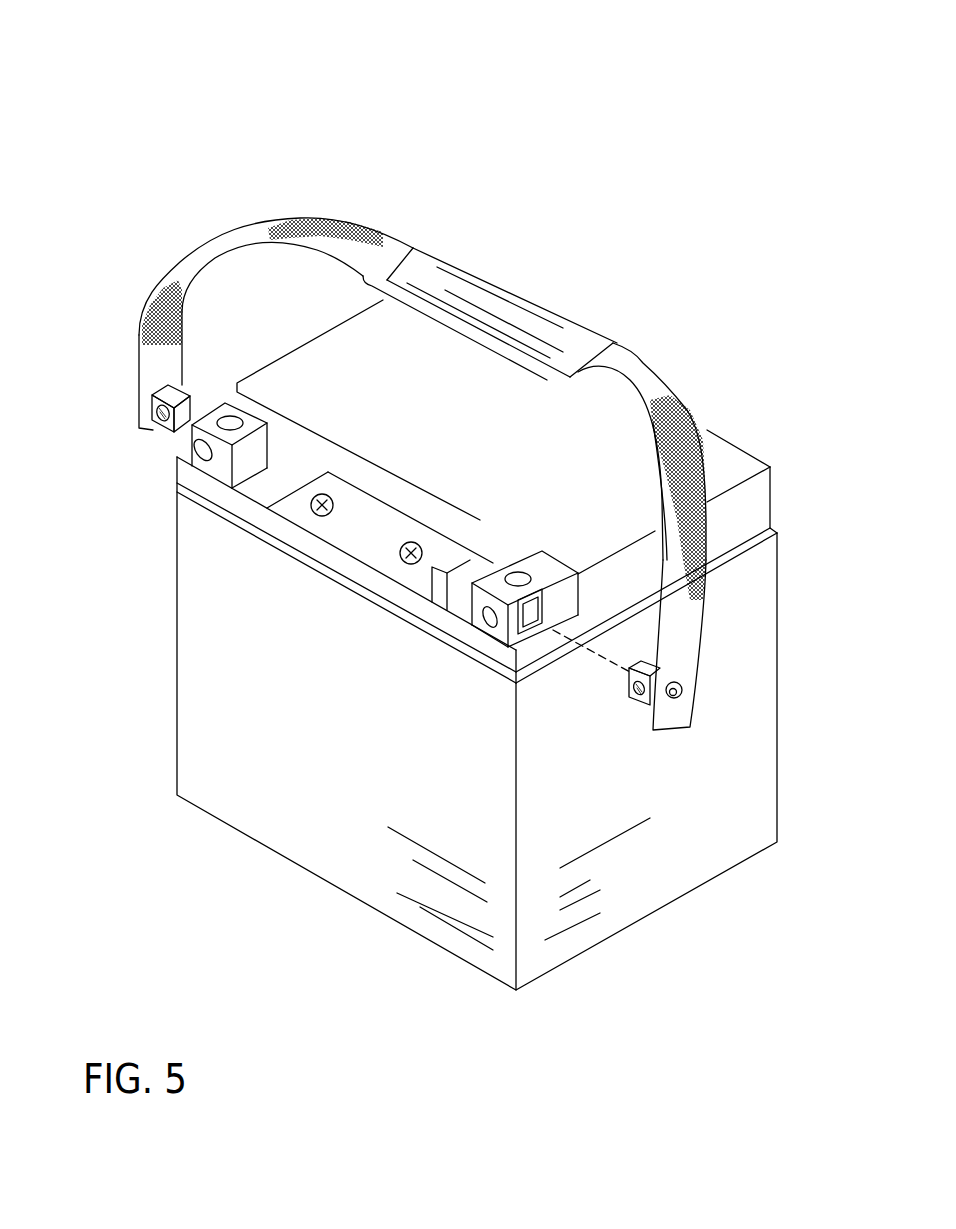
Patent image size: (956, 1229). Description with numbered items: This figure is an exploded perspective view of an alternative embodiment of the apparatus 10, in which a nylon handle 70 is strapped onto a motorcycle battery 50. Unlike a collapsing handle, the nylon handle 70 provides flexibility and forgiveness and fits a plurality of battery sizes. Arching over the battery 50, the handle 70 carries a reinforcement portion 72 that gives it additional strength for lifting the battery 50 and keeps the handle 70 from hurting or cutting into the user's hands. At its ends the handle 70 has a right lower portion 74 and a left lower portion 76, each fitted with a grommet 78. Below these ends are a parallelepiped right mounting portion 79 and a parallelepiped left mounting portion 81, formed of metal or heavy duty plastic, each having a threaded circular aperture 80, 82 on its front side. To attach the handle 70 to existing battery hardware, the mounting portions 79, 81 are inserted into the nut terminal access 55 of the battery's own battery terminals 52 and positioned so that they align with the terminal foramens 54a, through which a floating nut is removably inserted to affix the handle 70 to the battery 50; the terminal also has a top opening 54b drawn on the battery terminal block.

The apparatus 10 is at (551, 194).
The battery 50 is at (778, 564).
The battery terminals 52 is at (477, 623).
The terminal foramens 54a is at (493, 627).
The top opening of terminal 54b is at (518, 578).
The nut terminal access 55 is at (527, 628).
The nylon handle 70 is at (705, 403).
The reinforcement portion 72 is at (619, 338).
The right lower portion 74 is at (690, 703).
The left lower portion 76 is at (135, 404).
The grommet 78 is at (676, 684).
The right mounting portion 79 is at (627, 693).
The threaded circular aperture 80 is at (640, 700).
The left mounting portion 81 is at (167, 437).
The threaded circular aperture 82 is at (147, 430).